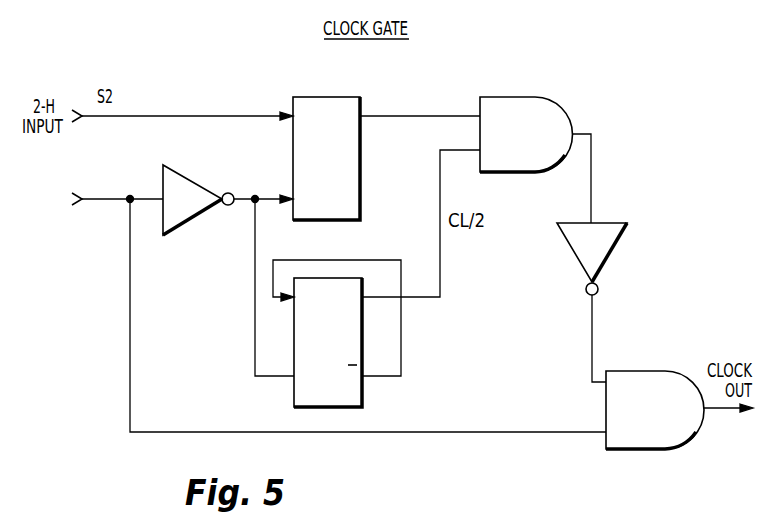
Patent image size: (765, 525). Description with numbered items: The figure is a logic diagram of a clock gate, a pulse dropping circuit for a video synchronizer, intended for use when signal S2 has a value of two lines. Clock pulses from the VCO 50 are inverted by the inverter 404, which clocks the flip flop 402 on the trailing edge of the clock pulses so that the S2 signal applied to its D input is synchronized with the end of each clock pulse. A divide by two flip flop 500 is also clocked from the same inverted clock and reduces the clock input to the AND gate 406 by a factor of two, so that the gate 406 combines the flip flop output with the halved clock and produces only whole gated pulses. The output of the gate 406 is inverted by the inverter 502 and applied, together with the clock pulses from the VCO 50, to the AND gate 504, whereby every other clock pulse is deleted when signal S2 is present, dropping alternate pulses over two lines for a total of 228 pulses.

The flip flop 402 is at (302, 97).
The inverter 404 is at (193, 217).
The AND gate 406 is at (520, 173).
The divide by two flip flop 500 is at (362, 392).
The inverter 502 is at (611, 257).
The AND gate 504 is at (670, 371).
The VCO 50 is at (90, 200).
The consecutive pulses 228 is at (658, 89).